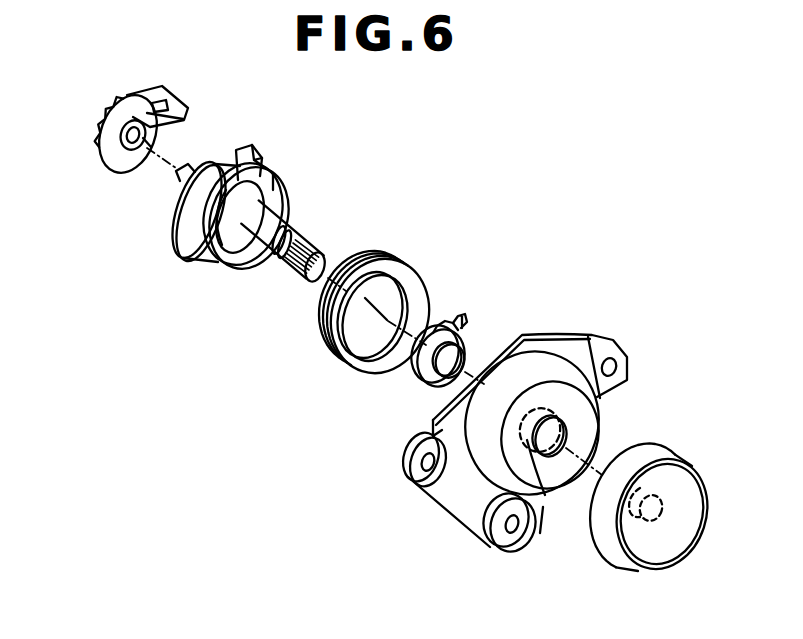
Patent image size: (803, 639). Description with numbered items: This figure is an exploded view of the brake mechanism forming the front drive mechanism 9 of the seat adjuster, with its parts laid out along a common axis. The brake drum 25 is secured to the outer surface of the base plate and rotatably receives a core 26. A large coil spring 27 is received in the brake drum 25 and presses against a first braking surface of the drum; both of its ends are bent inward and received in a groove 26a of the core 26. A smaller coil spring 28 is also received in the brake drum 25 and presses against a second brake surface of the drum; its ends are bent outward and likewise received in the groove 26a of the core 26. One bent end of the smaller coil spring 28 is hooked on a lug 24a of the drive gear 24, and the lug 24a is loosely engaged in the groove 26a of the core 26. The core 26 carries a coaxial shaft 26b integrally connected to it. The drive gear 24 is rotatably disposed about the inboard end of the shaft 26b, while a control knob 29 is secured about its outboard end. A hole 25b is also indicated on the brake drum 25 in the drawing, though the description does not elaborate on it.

The front drive mechanism 9 is at (470, 238).
The drive gear 24 is at (102, 143).
The lug 24a is at (162, 87).
The brake drum 25 is at (528, 370).
The pin hole of housing 25b is at (545, 495).
The core 26 is at (284, 186).
The groove 26a is at (266, 170).
The shaft 26b is at (243, 260).
The large coil spring 27 is at (317, 337).
The smaller coil spring 28 is at (417, 375).
The control knob 29 is at (668, 547).